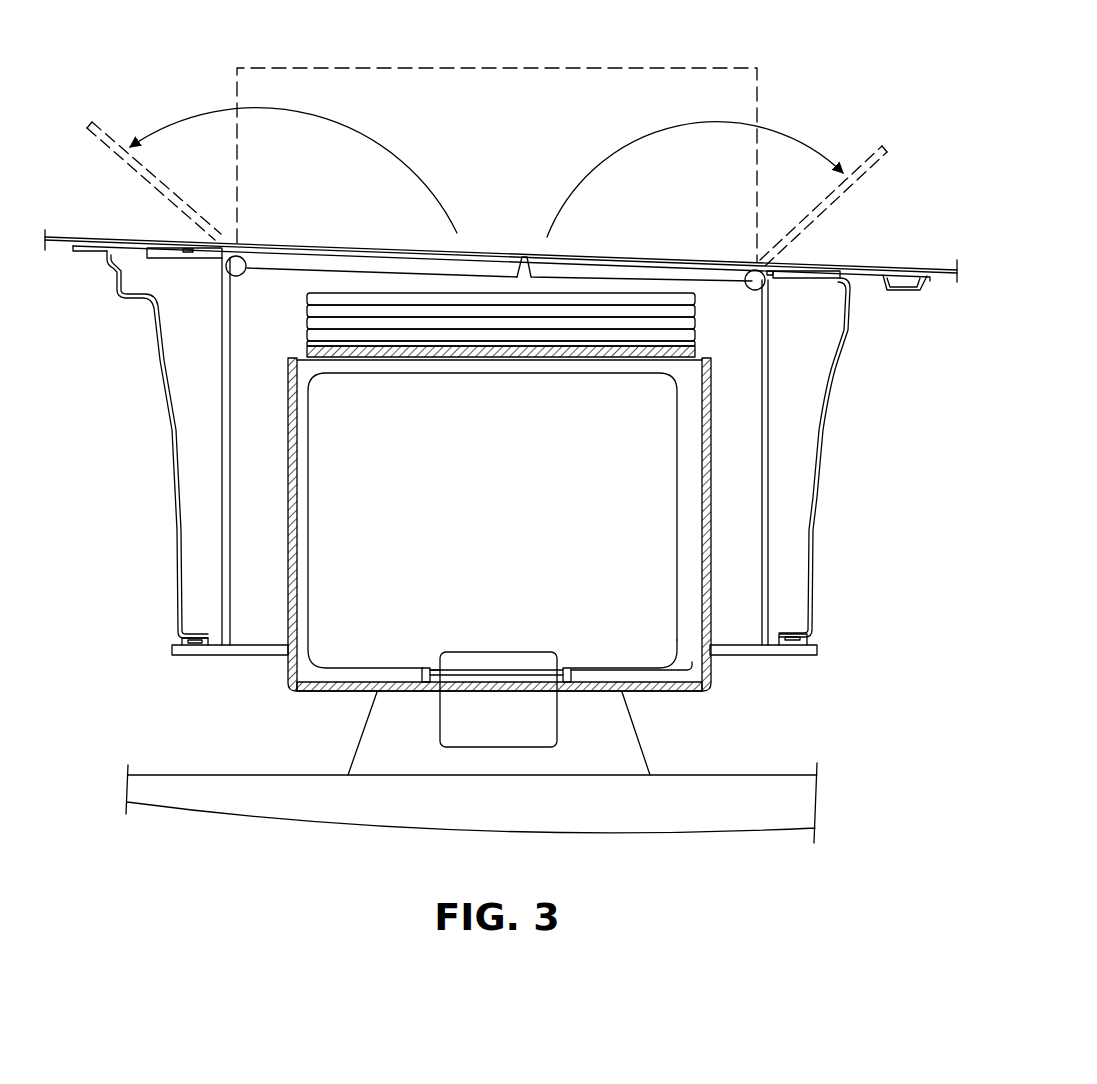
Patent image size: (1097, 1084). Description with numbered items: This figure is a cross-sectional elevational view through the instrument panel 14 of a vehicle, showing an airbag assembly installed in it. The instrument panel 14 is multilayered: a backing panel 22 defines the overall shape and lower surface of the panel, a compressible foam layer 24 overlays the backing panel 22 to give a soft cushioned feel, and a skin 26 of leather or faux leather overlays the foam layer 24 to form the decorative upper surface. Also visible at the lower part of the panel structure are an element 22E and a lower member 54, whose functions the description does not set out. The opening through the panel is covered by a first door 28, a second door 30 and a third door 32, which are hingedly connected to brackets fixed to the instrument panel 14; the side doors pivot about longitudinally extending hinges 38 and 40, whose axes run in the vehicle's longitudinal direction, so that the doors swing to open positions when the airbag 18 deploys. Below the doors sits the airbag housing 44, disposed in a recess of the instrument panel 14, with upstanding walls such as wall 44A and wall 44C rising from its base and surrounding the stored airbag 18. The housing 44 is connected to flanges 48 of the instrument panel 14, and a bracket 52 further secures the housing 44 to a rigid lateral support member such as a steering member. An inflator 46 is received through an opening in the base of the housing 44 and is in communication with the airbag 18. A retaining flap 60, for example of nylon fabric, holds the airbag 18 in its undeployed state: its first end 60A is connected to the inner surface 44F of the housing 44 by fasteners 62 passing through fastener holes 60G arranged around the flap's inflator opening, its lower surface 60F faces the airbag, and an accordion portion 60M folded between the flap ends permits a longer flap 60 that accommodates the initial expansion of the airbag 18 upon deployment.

The instrument panel 14 is at (278, 243).
The airbag 18 is at (308, 530).
The backing panel 22 is at (61, 251).
The housing bottom wall 22E is at (607, 692).
The foam layer 24 is at (127, 233).
The skin 26 is at (940, 265).
The first door 28 is at (578, 105).
The second door 30 is at (370, 270).
The third door 32 is at (604, 274).
The longitudinally extending hinge 38 is at (240, 273).
The longitudinally extending hinge 40 is at (752, 286).
The airbag housing 44 is at (320, 693).
The wall 44A is at (712, 535).
The wall 44C is at (287, 483).
The inner surface of the housing 44F is at (648, 660).
The inflator 46 is at (517, 651).
The flanges 48 is at (165, 450).
The bracket 52 is at (640, 738).
The base plate 54 is at (678, 836).
The retaining flap 60 is at (654, 343).
The first end 60A is at (422, 674).
The lower surface 60F is at (583, 363).
The fastener holes 60G is at (442, 680).
The accordion portion 60M is at (435, 312).
The fasteners 62 is at (428, 665).